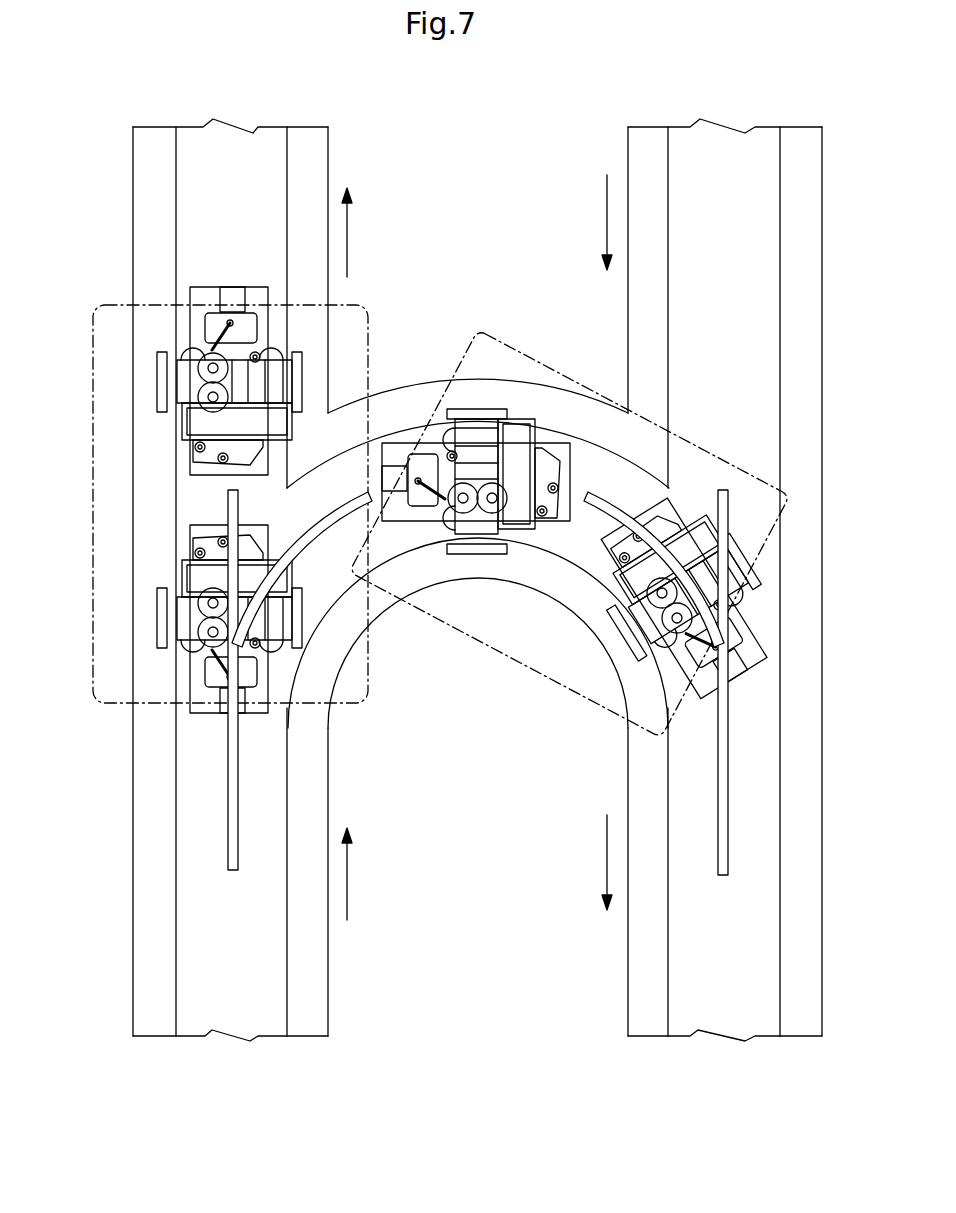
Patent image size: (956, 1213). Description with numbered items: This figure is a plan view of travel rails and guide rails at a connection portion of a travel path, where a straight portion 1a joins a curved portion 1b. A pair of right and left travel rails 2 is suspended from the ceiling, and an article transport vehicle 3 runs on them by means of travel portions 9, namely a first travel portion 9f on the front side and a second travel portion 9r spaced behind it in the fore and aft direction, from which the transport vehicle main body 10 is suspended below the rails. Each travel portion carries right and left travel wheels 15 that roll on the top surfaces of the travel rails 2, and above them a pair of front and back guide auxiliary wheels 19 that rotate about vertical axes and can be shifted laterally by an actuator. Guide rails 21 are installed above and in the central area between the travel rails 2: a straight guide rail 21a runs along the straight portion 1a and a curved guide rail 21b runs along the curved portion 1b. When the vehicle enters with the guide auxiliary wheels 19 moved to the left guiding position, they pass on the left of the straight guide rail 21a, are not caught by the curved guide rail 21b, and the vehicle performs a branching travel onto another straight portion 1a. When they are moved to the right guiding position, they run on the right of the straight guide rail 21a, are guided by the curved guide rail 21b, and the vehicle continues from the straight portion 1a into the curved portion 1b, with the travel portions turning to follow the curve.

The straight portion 1a is at (342, 955).
The curved portion 1b is at (423, 370).
The travel rail 2 is at (162, 1022).
The article transport vehicle 3 is at (357, 730).
The travel portion 9 is at (439, 512).
The first travel portion 9f is at (147, 326).
The second travel portion 9r is at (118, 752).
The transport vehicle main body 10 is at (345, 303).
The travel wheel 15 is at (165, 398).
The guide auxiliary wheel 19 is at (203, 358).
The guide rail 21 is at (461, 646).
The straight guide rail 21a is at (230, 848).
The curved guide rail 21b is at (395, 650).